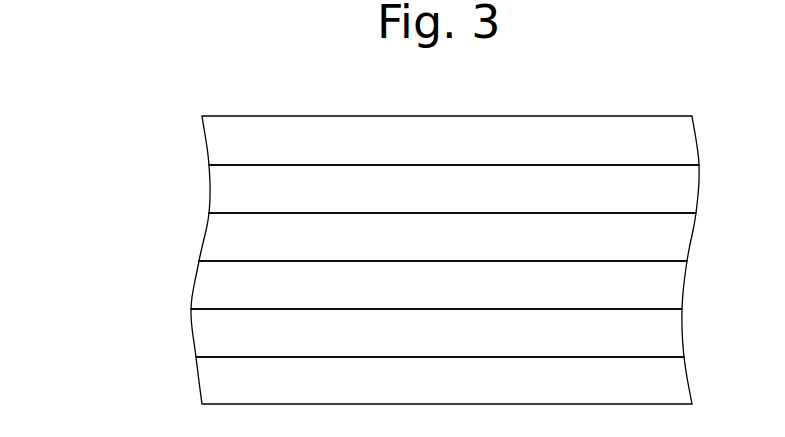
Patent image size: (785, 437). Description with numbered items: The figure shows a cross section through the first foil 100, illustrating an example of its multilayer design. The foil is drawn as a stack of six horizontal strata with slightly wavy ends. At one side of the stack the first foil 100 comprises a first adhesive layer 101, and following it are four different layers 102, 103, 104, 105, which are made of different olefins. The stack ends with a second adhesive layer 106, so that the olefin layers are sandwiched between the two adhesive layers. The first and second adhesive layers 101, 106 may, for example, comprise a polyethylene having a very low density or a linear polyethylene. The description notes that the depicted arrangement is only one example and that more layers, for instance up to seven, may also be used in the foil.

The first foil 100 is at (132, 210).
The first adhesive layer 101 is at (673, 383).
The olefin layer 102 is at (667, 340).
The olefin layer 103 is at (670, 290).
The olefin layer 104 is at (685, 242).
The olefin layer 105 is at (680, 192).
The second adhesive layer 106 is at (673, 143).